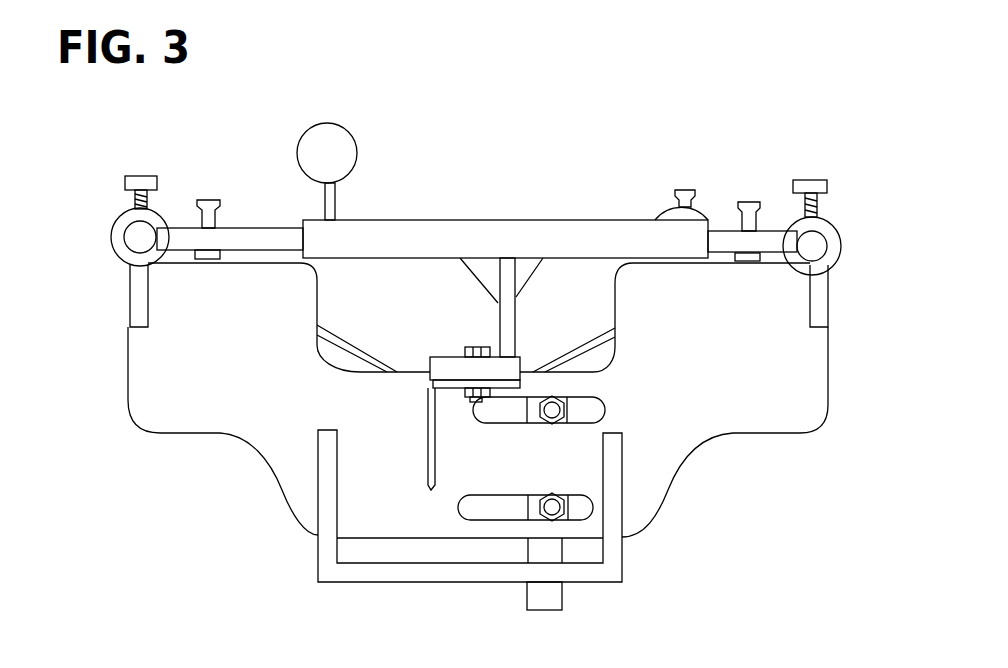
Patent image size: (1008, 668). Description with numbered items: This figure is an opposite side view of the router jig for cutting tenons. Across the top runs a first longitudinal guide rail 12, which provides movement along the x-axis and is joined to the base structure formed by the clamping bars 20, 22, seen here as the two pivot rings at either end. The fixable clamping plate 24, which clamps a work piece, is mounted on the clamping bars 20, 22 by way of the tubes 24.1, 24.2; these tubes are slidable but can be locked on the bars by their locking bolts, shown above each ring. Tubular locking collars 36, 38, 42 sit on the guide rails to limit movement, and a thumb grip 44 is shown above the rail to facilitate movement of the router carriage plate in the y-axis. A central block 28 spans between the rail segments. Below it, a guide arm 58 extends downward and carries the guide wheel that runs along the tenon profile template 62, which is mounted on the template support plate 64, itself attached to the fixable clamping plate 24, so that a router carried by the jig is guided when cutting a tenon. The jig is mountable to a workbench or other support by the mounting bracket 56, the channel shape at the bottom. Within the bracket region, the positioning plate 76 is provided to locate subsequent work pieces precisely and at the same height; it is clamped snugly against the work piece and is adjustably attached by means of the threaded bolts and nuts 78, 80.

The first longitudinal guide rail 12 is at (245, 232).
The clamping bar 20 is at (135, 237).
The clamping bar 22 is at (813, 247).
The clamping plate 24 is at (758, 418).
The tube 24.1 is at (825, 225).
The tube 24.2 is at (128, 223).
The block 28 is at (490, 232).
The tubular locking collar 36 is at (745, 205).
The tubular locking collar 38 is at (202, 200).
The tubular locking collar 42 is at (681, 190).
The thumb grip 44 is at (345, 143).
The mounting bracket 56 is at (328, 548).
The guide arm 58 is at (513, 307).
The tenon profile template 62 is at (463, 365).
The template support plate 64 is at (455, 385).
The positioning plate 76 is at (550, 598).
The threaded bolt and nut 78 is at (573, 518).
The threaded bolt and nut 80 is at (567, 412).